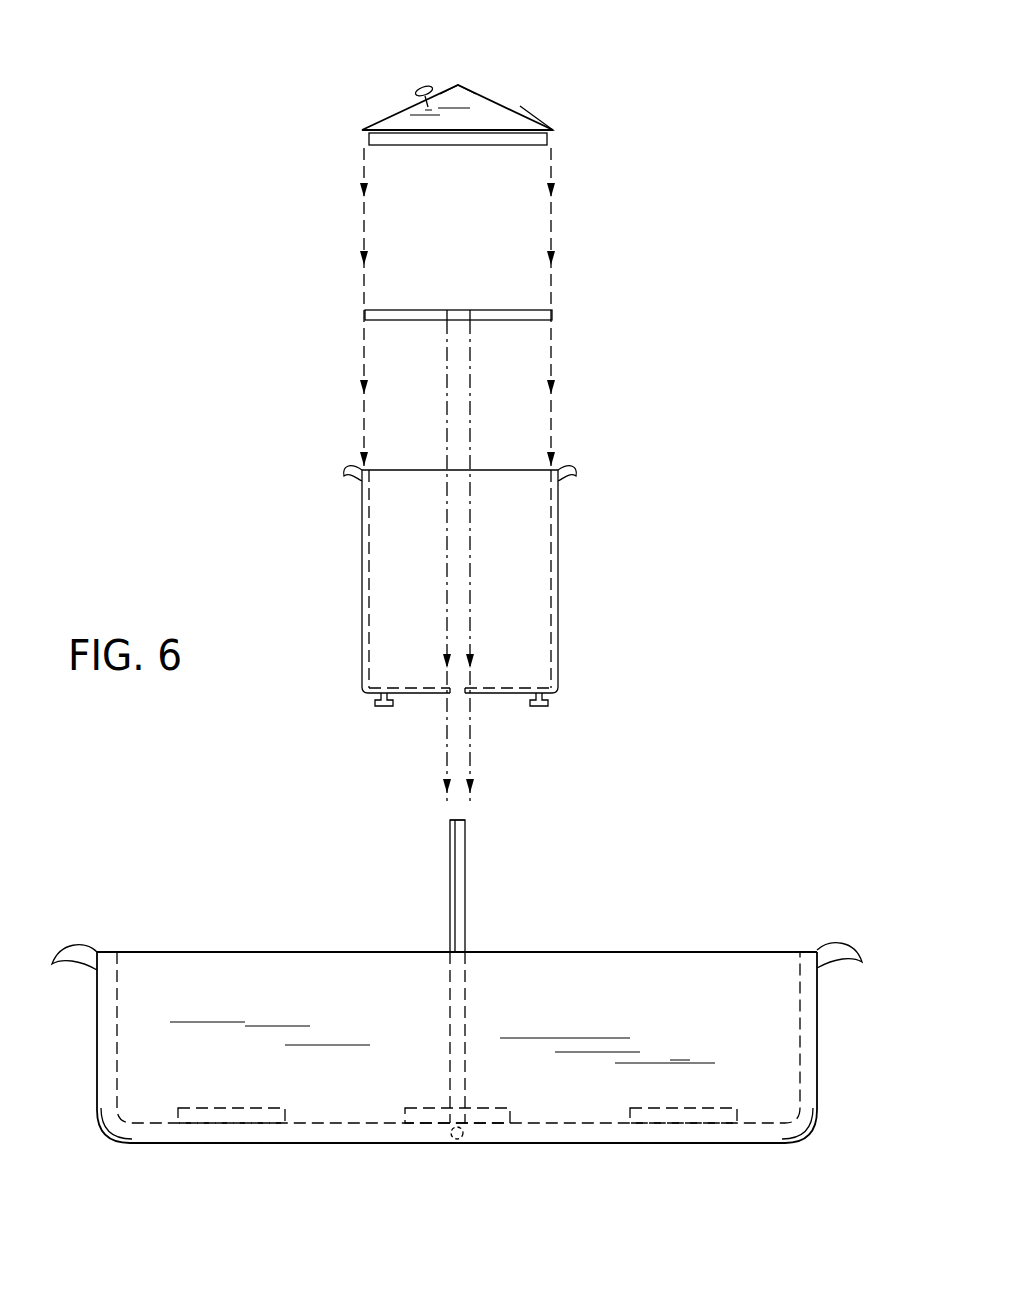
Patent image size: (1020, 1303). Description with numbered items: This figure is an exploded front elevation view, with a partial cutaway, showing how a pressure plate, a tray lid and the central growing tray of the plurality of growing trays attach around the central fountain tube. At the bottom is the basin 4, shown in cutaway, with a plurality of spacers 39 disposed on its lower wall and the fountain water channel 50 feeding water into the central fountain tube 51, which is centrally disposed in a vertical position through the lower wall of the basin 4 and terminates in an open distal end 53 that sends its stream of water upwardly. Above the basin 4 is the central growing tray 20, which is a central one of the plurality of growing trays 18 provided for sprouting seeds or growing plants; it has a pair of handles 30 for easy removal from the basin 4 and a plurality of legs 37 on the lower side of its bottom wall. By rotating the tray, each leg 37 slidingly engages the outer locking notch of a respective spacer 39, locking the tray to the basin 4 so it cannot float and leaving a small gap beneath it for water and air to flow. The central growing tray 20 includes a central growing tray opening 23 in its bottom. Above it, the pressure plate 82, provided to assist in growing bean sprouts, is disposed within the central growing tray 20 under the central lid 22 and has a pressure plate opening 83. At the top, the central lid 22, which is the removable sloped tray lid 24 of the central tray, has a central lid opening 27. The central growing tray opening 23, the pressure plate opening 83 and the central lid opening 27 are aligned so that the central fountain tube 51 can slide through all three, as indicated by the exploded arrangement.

The basin 4 is at (692, 951).
The growing tray 18 is at (558, 523).
The central growing tray 20 is at (524, 567).
The central lid 22 is at (400, 107).
The central growing tray opening 23 is at (455, 694).
The tray lid 24 is at (505, 107).
The central lid opening 27 is at (458, 85).
The handles 30 is at (346, 468).
The legs 37 is at (545, 706).
The spacers 39 is at (200, 1118).
The fountain water channel 50 is at (455, 1136).
The central fountain tube 51 is at (468, 826).
The open distal end 53 is at (458, 820).
The pressure plate 82 is at (365, 316).
The pressure plate opening 83 is at (467, 310).